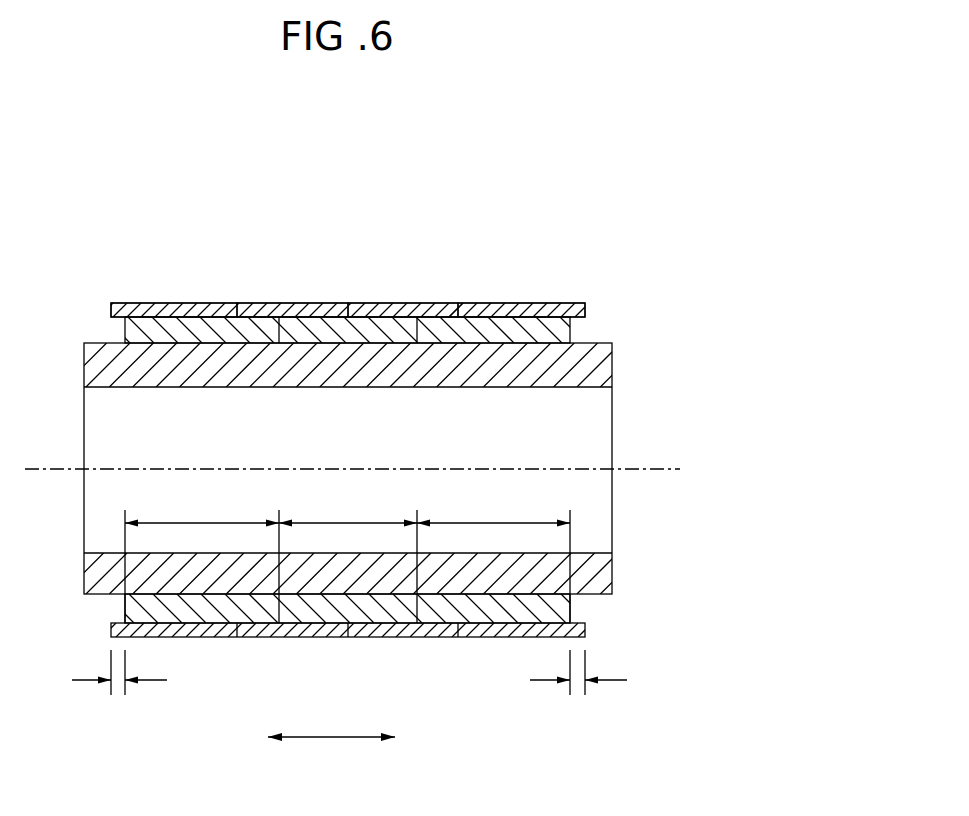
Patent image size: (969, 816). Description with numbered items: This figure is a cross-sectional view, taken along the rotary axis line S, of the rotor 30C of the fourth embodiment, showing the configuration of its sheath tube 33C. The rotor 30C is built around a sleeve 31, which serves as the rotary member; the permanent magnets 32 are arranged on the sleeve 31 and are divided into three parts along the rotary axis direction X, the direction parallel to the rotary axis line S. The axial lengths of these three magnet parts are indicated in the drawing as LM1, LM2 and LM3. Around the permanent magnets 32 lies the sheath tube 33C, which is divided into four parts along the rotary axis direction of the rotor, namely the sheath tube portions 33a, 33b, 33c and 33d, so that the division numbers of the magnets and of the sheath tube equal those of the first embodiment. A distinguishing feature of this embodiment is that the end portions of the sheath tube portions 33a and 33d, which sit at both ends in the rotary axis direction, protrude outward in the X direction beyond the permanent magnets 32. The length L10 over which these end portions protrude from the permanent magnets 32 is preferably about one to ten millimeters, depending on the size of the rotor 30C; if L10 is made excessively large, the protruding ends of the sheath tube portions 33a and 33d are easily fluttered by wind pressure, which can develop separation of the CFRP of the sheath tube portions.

The rotor 30C is at (646, 239).
The sleeve 31 is at (596, 355).
The permanent magnet 32 is at (182, 332).
The sheath tube 33C is at (400, 435).
The sheath tube portion 33a is at (182, 303).
The sheath tube portion 33b is at (293, 303).
The sheath tube portion 33c is at (398, 303).
The sheath tube portion 33d is at (520, 303).
The rotary axis line S is at (642, 468).
The length of first intermediate segment LM1 is at (202, 558).
The length of second intermediate segment LM2 is at (348, 558).
The length of third intermediate segment LM3 is at (493, 558).
The length L10 is at (349, 688).
The rotary axis direction X is at (328, 738).